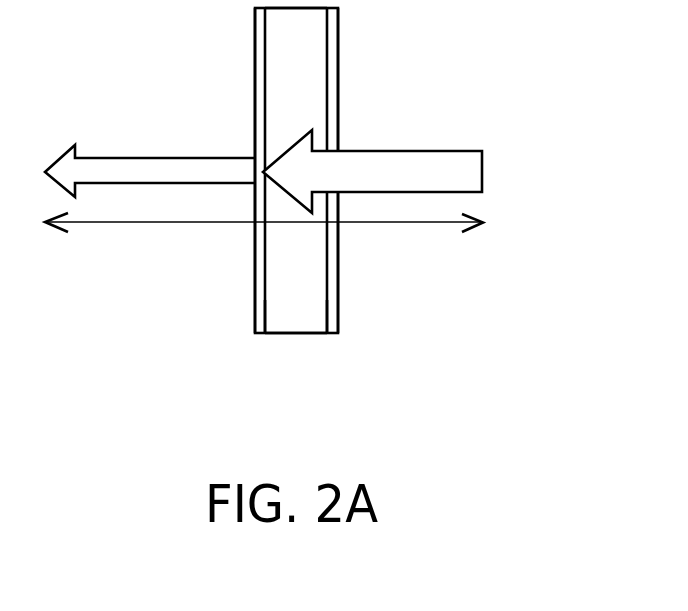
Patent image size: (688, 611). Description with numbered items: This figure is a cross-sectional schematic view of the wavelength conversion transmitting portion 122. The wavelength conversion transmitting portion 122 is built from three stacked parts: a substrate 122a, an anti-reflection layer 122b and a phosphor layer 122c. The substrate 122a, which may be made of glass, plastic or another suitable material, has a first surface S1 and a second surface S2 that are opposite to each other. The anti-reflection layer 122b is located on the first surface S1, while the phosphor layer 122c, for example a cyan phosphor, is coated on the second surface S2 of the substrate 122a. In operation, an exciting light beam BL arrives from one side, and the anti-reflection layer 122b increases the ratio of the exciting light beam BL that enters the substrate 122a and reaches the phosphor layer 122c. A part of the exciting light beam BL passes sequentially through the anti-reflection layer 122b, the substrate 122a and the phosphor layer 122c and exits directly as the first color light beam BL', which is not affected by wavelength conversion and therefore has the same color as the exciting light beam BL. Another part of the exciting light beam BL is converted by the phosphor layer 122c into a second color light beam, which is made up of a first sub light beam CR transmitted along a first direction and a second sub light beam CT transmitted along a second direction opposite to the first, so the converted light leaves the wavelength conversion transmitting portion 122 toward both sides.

The wavelength conversion transmitting portion 122 is at (518, 414).
The substrate 122a is at (292, 320).
The anti-reflection layer 122b is at (338, 285).
The phosphor layer 122c is at (256, 283).
The first surface S1 is at (334, 322).
The second surface S2 is at (258, 322).
The exciting light beam BL is at (372, 161).
The first color light beam BL' is at (150, 155).
The second sub light beam CT is at (135, 223).
The first sub light beam CR is at (427, 224).